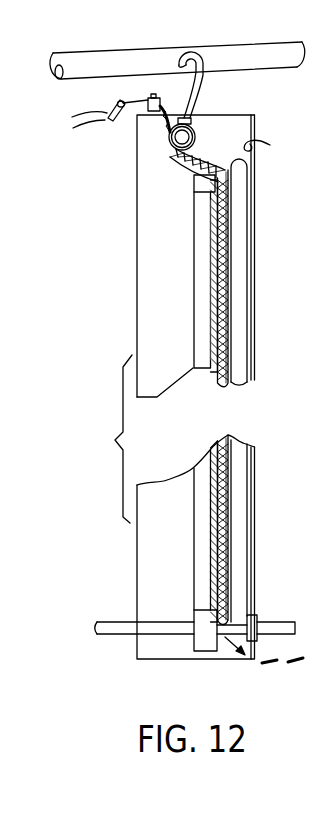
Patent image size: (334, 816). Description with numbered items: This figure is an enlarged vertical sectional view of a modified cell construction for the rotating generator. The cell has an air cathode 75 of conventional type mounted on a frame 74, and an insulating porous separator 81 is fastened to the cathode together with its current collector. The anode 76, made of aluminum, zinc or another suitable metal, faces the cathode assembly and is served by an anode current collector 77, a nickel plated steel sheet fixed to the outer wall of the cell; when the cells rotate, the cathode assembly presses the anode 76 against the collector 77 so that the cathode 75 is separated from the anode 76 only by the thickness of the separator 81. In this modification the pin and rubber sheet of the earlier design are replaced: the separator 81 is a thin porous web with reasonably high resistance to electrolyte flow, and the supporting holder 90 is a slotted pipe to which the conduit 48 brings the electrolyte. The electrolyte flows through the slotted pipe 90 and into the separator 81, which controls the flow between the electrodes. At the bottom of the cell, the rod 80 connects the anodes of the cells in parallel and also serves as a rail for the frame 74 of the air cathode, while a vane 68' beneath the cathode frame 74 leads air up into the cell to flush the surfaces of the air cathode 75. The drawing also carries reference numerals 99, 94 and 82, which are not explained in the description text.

The conduit 48 is at (204, 87).
The cable end fitting 99 is at (100, 118).
The supporting holder 90 is at (168, 141).
The panel 94 is at (257, 118).
The anode current collector 77 is at (272, 144).
The frame 74 is at (203, 185).
The separator 81 is at (229, 247).
The hatched liner strip 82 is at (222, 285).
The air cathode 75 is at (212, 320).
The anode 76 is at (237, 332).
The rod 80 is at (272, 627).
The vane 68' is at (170, 653).